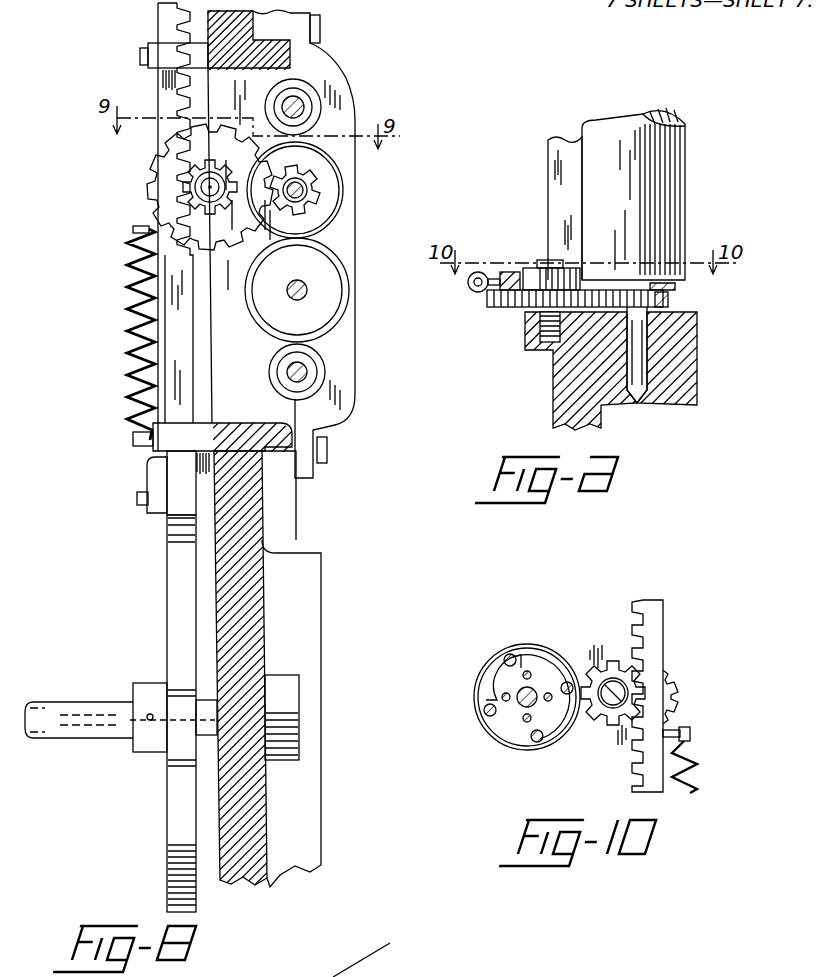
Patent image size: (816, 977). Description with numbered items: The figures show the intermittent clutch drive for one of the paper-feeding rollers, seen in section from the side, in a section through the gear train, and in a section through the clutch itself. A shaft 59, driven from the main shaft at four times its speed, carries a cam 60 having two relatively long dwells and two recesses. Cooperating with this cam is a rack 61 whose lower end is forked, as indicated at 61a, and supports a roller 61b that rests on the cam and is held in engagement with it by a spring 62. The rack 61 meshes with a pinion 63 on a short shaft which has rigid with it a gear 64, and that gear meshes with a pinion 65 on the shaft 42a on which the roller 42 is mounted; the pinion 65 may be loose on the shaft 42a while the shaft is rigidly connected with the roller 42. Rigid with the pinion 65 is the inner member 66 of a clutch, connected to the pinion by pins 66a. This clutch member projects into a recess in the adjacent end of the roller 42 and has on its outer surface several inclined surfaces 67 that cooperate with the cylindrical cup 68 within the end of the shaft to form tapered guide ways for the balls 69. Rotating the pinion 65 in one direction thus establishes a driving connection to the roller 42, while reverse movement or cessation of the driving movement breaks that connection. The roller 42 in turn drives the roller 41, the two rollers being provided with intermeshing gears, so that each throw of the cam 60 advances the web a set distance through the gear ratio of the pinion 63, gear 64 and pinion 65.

In FIG. 8, the roller 41 is at (327, 309).
In FIG. 8, the roller 42 is at (318, 228).
In FIG. 9, the roller 42 is at (670, 220).
In FIG. 8, the shaft 42a is at (303, 193).
In FIG. 9, the shaft 42a is at (640, 398).
In FIG. 10, the shaft 42a is at (523, 703).
In FIG. 8, the shaft 59 is at (56, 707).
In FIG. 8, the cam 60 is at (170, 803).
In FIG. 8, the rack 61 is at (160, 87).
In FIG. 9, the rack 61 is at (506, 270).
In FIG. 10, the rack 61 is at (656, 630).
In FIG. 8, the forked lower end of rack 61a is at (158, 470).
In FIG. 8, the roller 61b is at (163, 518).
In FIG. 8, the spring 62 is at (133, 393).
In FIG. 9, the spring 62 is at (470, 289).
In FIG. 10, the spring 62 is at (697, 772).
In FIG. 8, the pinion 63 is at (196, 166).
In FIG. 9, the pinion 63 is at (530, 268).
In FIG. 10, the pinion 63 is at (598, 720).
In FIG. 8, the gear 64 is at (150, 190).
In FIG. 9, the gear 64 is at (498, 308).
In FIG. 10, the gear 64 is at (672, 695).
In FIG. 8, the pinion 65 is at (319, 176).
In FIG. 9, the pinion 65 is at (668, 300).
In FIG. 10, the inner member of clutch 66 is at (507, 710).
In FIG. 10, the pins 66a is at (502, 690).
In FIG. 10, the inclined surfaces 67 is at (510, 668).
In FIG. 10, the cylindrical cup 68 is at (478, 701).
In FIG. 10, the balls 69 is at (513, 655).